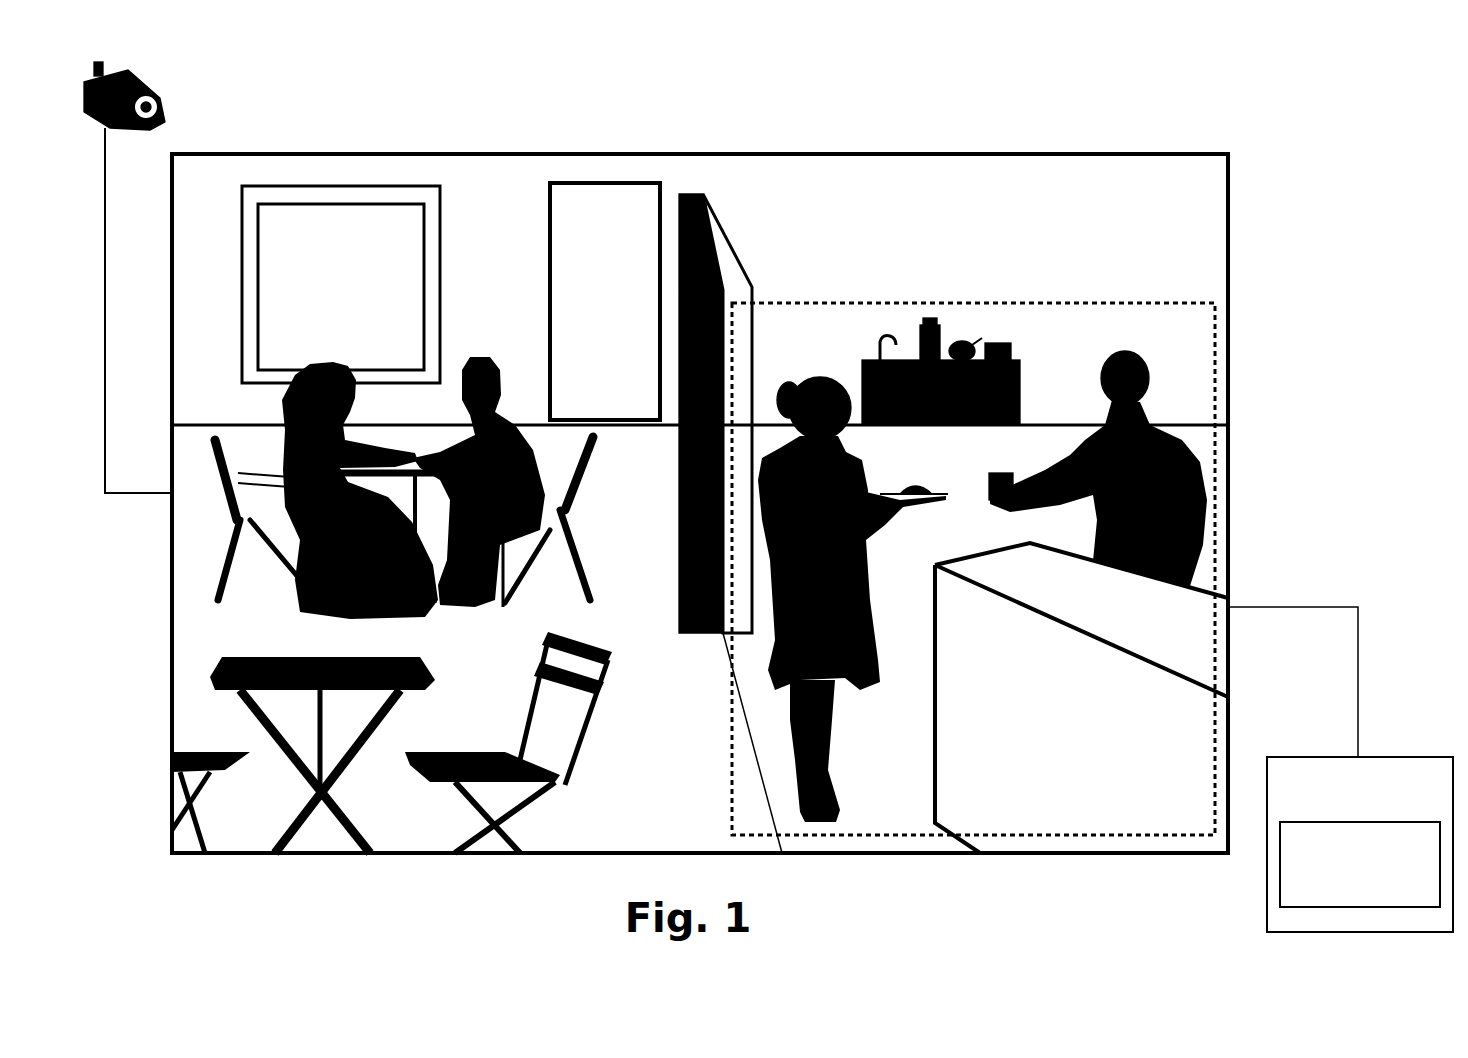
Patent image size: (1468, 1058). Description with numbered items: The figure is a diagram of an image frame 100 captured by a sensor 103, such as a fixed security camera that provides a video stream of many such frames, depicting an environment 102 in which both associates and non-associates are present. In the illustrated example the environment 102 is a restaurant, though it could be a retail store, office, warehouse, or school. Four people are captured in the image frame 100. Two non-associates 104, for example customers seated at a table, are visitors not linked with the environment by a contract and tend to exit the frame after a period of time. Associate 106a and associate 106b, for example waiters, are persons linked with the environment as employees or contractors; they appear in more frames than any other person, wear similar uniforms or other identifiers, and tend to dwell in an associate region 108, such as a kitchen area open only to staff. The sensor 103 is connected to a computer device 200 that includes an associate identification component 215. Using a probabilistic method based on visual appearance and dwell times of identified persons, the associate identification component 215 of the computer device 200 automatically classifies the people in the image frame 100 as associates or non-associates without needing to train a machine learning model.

The image frame 100 is at (691, 78).
The environment 102 is at (1172, 205).
The sensor 103 is at (160, 100).
The non-associates 104 is at (465, 368).
The associate 106a is at (822, 378).
The associate 106b is at (1190, 437).
The associate region 108 is at (968, 300).
The computer device 200 is at (1340, 769).
The associate identification component 215 is at (1360, 864).